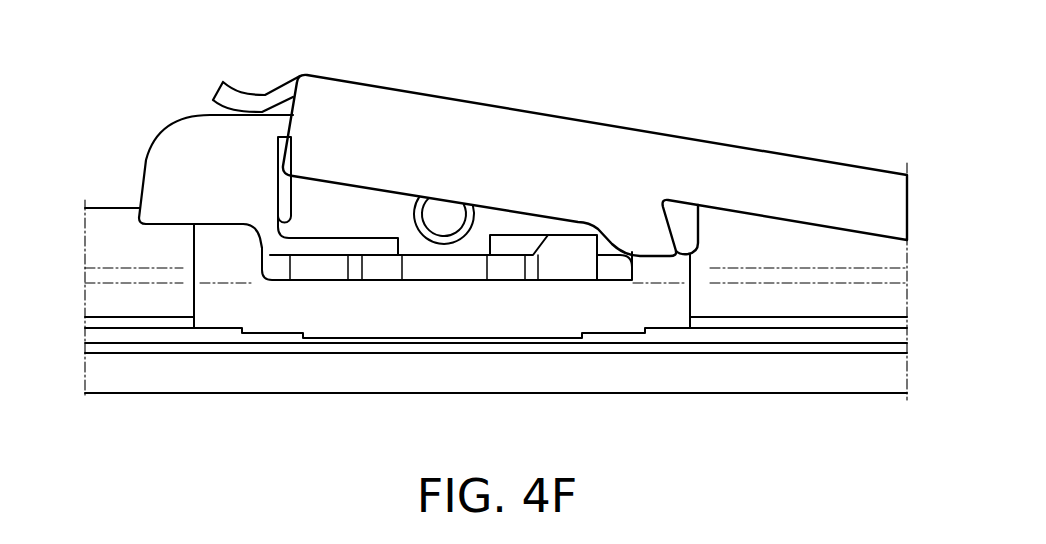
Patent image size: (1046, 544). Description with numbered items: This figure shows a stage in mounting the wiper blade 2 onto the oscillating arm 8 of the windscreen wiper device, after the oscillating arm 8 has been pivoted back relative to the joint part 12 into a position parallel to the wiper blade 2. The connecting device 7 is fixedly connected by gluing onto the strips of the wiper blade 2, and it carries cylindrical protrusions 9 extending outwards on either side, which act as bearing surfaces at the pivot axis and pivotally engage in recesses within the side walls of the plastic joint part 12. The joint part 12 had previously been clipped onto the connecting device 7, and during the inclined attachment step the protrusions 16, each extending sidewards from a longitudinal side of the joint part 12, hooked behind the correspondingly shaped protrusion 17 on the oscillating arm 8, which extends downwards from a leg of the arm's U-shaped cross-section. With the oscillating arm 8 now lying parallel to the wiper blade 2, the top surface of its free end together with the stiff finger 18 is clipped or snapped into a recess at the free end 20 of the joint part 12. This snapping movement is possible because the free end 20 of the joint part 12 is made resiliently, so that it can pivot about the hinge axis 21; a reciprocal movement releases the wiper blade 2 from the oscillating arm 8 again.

The wiper blade 2 is at (748, 373).
The connecting device 7 is at (555, 318).
The oscillating arm 8 is at (565, 116).
The protrusions 9 is at (445, 238).
The joint part 12 is at (382, 210).
The protrusions 16 is at (692, 232).
The protrusion 17 is at (648, 237).
The stiff finger 18 is at (215, 90).
The free end 20 is at (173, 135).
The hinge axis 21 is at (313, 248).